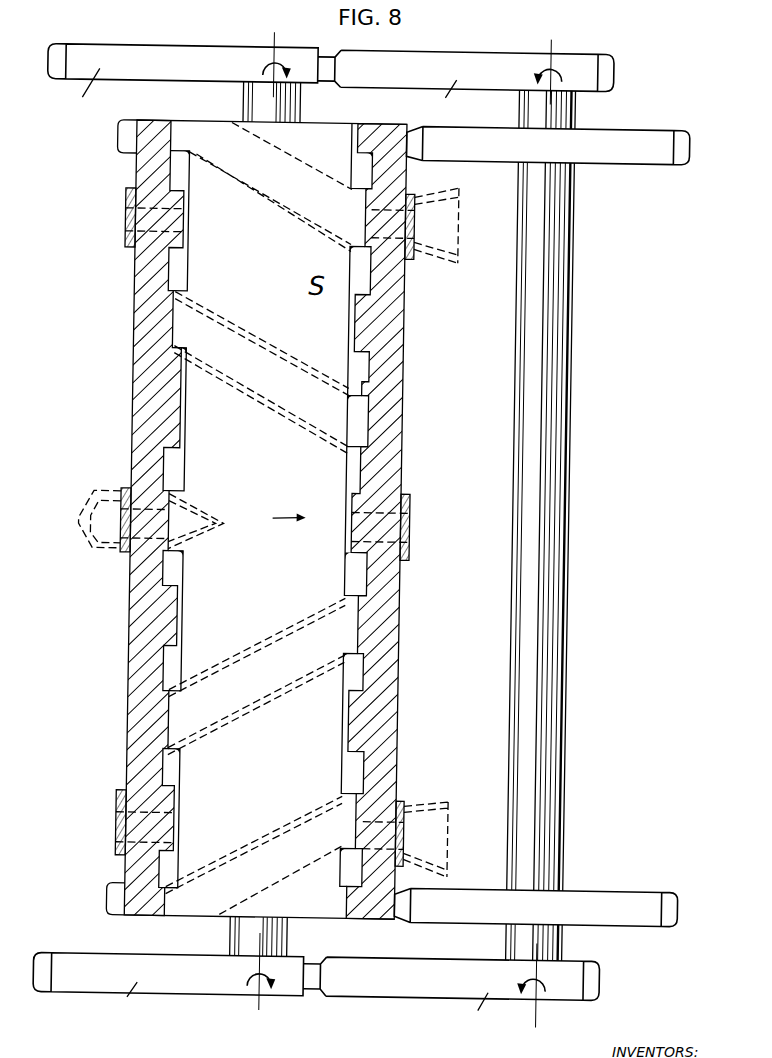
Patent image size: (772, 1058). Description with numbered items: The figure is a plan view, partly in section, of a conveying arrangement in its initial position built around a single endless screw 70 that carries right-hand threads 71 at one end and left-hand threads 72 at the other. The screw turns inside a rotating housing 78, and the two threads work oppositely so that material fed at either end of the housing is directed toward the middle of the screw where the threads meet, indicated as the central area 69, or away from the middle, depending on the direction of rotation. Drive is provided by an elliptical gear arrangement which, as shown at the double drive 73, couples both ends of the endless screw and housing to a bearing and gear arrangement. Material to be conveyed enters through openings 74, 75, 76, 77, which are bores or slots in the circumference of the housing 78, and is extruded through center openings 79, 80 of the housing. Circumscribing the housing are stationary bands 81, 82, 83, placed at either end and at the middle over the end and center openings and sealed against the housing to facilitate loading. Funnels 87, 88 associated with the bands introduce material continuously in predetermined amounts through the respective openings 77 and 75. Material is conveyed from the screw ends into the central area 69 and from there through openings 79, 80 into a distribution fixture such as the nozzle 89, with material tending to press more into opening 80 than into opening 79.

The central area 69 is at (289, 509).
The single endless screw 70 is at (243, 613).
The right-hand threads 71 is at (191, 711).
The left-hand threads 72 is at (180, 319).
The double drive 73 is at (407, 1019).
The opening 74 is at (159, 225).
The opening 75 is at (384, 223).
The opening 76 is at (129, 845).
The opening 77 is at (388, 828).
The rotating housing 78 is at (394, 389).
The center opening 79 is at (134, 568).
The center opening 80 is at (379, 516).
The stationary band 81 is at (438, 783).
The stationary band 82 is at (433, 273).
The stationary band 83 is at (435, 573).
The funnel 87 is at (458, 818).
The funnel 88 is at (443, 215).
The nozzle 89 is at (84, 538).